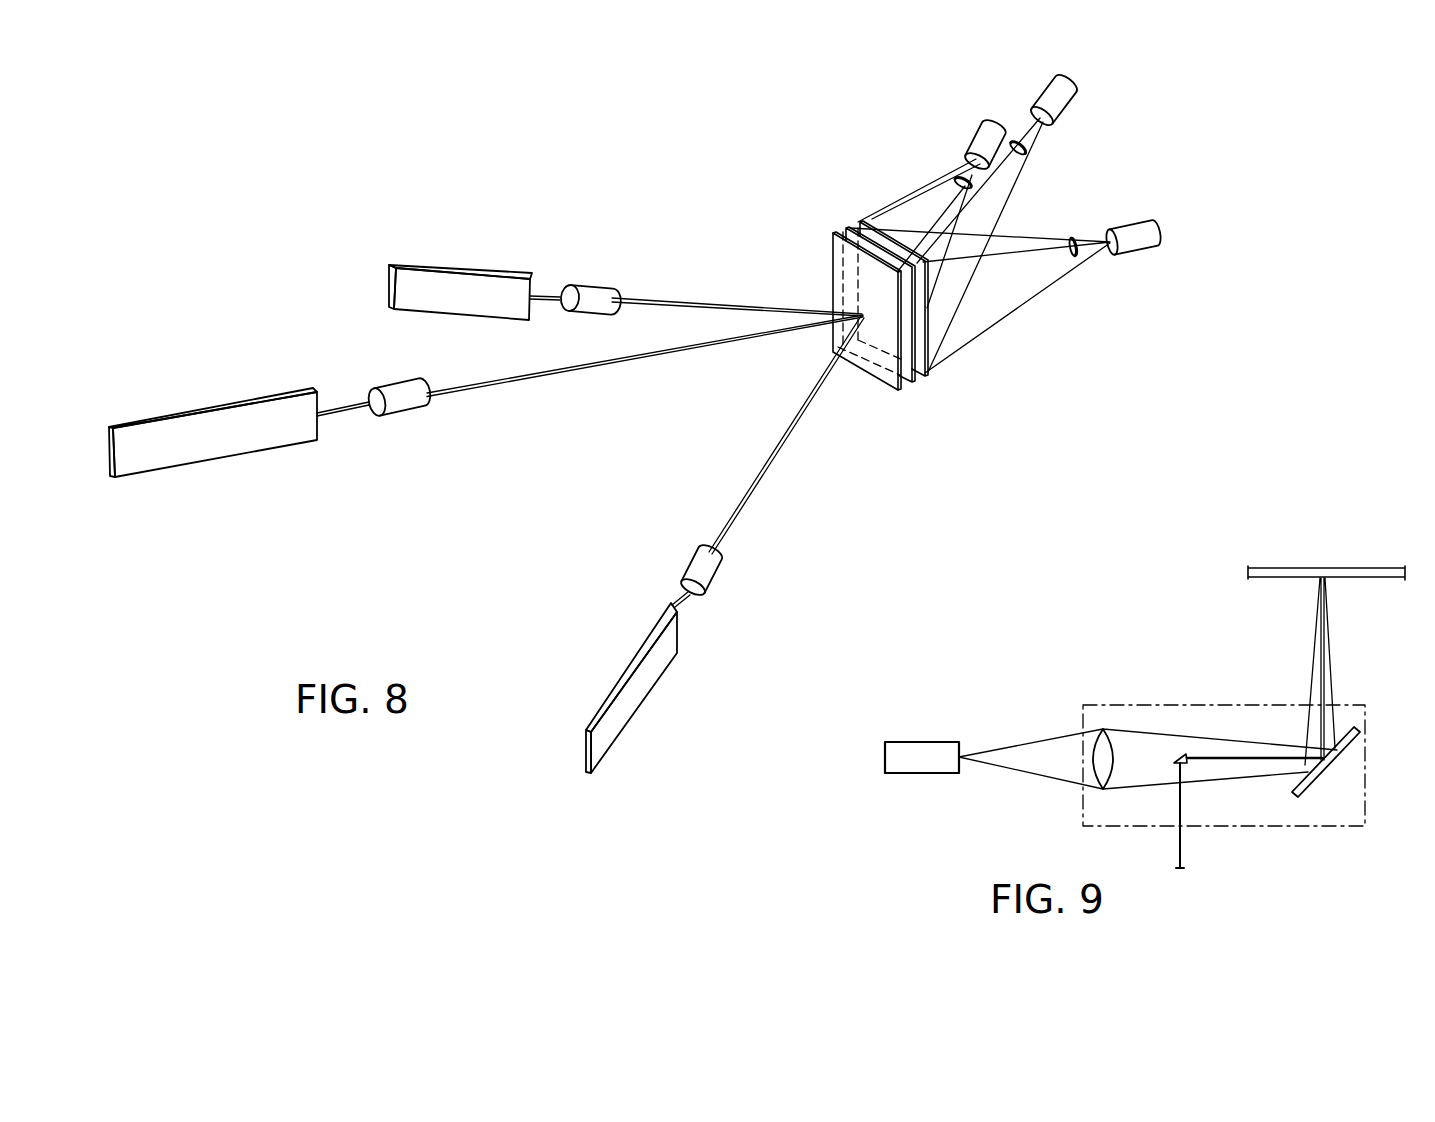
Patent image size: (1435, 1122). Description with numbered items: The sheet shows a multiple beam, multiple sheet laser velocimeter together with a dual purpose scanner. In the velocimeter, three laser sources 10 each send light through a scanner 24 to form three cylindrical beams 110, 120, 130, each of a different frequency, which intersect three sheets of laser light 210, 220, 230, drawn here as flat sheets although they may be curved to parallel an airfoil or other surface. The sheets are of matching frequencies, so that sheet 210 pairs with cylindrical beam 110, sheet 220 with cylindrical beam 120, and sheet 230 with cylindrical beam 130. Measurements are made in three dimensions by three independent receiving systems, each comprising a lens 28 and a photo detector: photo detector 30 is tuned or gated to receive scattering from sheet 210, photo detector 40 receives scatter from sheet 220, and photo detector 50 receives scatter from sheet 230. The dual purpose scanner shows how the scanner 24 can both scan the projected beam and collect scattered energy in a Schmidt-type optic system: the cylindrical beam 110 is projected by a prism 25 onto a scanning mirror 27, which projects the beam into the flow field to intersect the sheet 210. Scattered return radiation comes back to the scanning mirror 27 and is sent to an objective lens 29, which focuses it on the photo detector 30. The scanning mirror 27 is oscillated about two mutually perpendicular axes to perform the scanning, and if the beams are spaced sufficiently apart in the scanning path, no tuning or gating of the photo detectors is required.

In FIG. 8, the laser source 10 is at (413, 265).
In FIG. 8, the scanner 24 is at (583, 285).
In FIG. 9, the scanner 24 is at (1327, 827).
In FIG. 9, the prism 25 is at (1183, 752).
In FIG. 9, the scanning mirror 27 is at (1357, 732).
In FIG. 8, the lens 28 is at (947, 188).
In FIG. 9, the objective lens 29 is at (1103, 728).
In FIG. 8, the photo detector 30 is at (982, 128).
In FIG. 9, the photo detector 30 is at (908, 742).
In FIG. 8, the photo detector 40 is at (1142, 252).
In FIG. 8, the photo detector 50 is at (1050, 86).
In FIG. 8, the cylindrical beam 110 is at (627, 365).
In FIG. 9, the cylindrical beam 110 is at (1183, 850).
In FIG. 8, the cylindrical beam 120 is at (725, 303).
In FIG. 8, the cylindrical beam 130 is at (787, 440).
In FIG. 8, the sheet of laser light 210 is at (830, 247).
In FIG. 9, the sheet of laser light 210 is at (1265, 578).
In FIG. 8, the sheet of laser light 220 is at (837, 227).
In FIG. 8, the sheet of laser light 230 is at (875, 220).